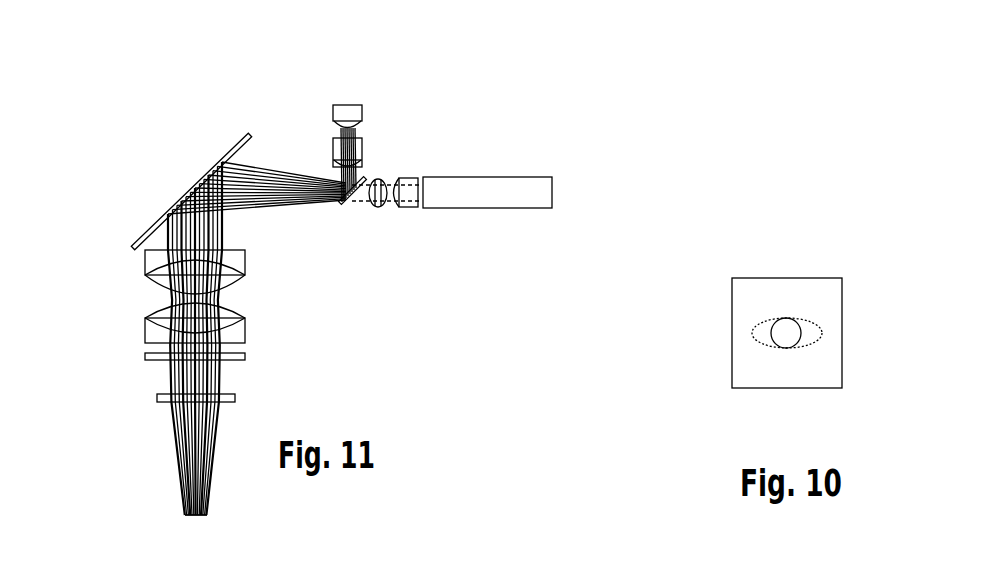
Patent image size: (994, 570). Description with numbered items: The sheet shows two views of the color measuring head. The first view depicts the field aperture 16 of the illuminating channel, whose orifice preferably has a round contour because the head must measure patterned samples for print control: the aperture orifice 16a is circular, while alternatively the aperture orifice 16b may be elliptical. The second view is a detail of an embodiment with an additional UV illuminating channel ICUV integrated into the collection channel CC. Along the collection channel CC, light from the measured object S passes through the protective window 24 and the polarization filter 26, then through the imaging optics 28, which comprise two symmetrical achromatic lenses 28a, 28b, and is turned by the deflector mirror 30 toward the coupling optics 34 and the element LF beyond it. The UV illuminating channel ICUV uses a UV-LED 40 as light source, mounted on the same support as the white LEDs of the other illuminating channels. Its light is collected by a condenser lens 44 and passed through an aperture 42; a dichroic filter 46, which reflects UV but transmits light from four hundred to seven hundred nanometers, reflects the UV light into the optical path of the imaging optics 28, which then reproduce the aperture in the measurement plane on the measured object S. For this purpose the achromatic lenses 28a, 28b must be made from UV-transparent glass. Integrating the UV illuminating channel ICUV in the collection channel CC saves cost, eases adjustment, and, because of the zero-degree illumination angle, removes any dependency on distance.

In FIG. 11, the UV-LED 40 is at (344, 113).
In FIG. 11, the aperture 42 is at (362, 140).
In FIG. 11, the condenser lens 44 is at (363, 170).
In FIG. 11, the dichroic filter 46 is at (358, 204).
In FIG. 11, the coupling optics 34 is at (391, 212).
In FIG. 11, the laser light source LF is at (497, 200).
In FIG. 11, the deflector mirror 30 is at (225, 153).
In FIG. 11, the collection channel CC is at (152, 195).
In FIG. 11, the UV illuminating channel ICUV is at (320, 127).
In FIG. 11, the imaging optics 28 is at (206, 309).
In FIG. 11, the achromatic lens 28a is at (150, 333).
In FIG. 11, the achromatic lens 28b is at (150, 262).
In FIG. 11, the polarization filter 26 is at (145, 357).
In FIG. 11, the protective window 24 is at (157, 400).
In FIG. 11, the measured object S is at (207, 517).
In FIG. 10, the field aperture 16 is at (740, 298).
In FIG. 10, the aperture orifice 16a is at (813, 322).
In FIG. 10, the aperture orifice 16b is at (758, 340).